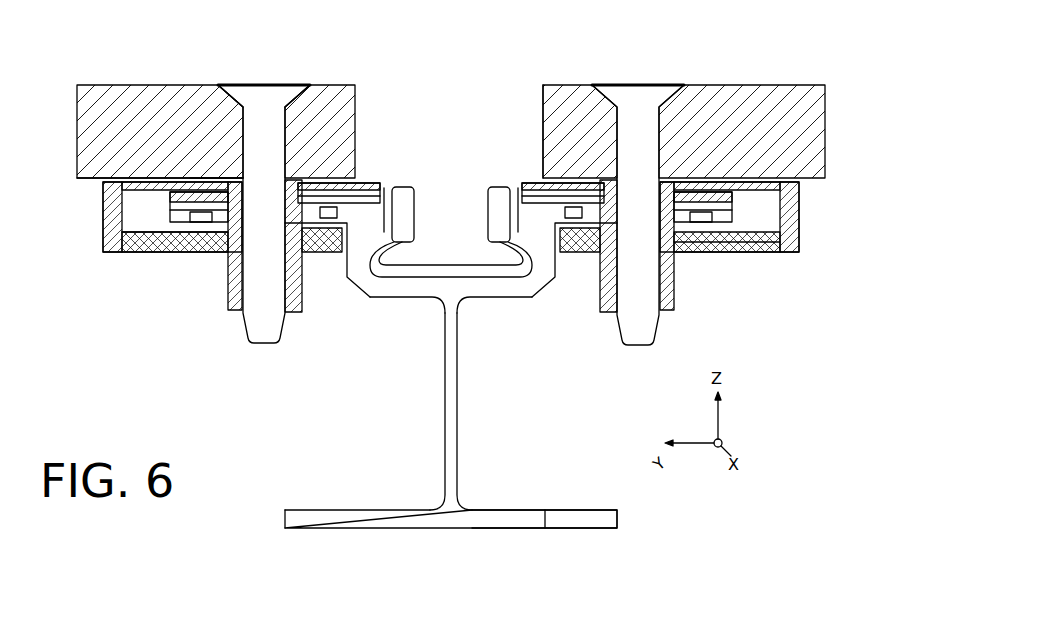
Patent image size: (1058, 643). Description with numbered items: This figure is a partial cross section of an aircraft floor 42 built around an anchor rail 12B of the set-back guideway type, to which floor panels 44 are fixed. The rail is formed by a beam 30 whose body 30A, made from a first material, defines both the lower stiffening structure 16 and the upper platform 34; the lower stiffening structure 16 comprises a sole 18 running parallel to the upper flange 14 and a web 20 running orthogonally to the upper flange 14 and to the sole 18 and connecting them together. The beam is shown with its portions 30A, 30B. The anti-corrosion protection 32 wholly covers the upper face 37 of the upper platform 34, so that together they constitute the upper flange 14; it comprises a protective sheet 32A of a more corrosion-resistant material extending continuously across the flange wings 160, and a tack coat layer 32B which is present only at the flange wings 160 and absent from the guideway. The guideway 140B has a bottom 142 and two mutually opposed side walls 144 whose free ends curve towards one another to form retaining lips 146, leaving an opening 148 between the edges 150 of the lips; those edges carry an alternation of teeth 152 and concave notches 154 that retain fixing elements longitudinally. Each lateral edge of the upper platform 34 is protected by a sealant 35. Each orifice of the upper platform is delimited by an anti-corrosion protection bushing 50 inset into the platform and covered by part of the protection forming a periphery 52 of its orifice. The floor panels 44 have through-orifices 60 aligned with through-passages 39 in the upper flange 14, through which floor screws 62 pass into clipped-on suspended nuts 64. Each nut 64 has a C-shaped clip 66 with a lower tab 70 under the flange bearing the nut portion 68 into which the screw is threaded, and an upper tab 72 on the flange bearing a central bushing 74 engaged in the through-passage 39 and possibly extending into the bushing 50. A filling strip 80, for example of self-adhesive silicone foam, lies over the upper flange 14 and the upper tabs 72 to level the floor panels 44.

The floor 42 is at (95, 106).
The floor panels 44 is at (216, 102).
The upper tab 72 is at (158, 186).
The central bushing 74 is at (199, 186).
The through-orifices 60 is at (249, 84).
The floor screws 62 is at (294, 108).
The filling strip 80 is at (748, 178).
The upper face 37 is at (541, 85).
The through-passage 39 is at (672, 192).
The sealant 35 is at (144, 272).
The clip 66 is at (104, 243).
The clipped-on suspended nut 64 is at (118, 253).
The lower tab 70 is at (155, 253).
The periphery 52 is at (233, 268).
The nut portion 68 is at (198, 256).
The flange wings 160 is at (365, 186).
The anti-corrosion protection bushing 50 is at (316, 256).
The upper flange 14 is at (784, 291).
The anti-corrosion protection 32 is at (769, 316).
The protective sheet 32A is at (745, 316).
The tack coat layer 32B is at (683, 253).
The upper platform 34 is at (722, 253).
The bottom 142 is at (451, 149).
The opening 148 is at (448, 228).
The edges 150 is at (403, 186).
The concave notches 154 is at (412, 131).
The teeth 152 is at (493, 188).
The side walls 144 is at (357, 247).
The retaining lips 146 is at (452, 325).
The guideway 140B is at (524, 307).
The lower stiffening structure 16 is at (406, 425).
The web 20 is at (447, 430).
The sole 18 is at (398, 511).
The beam 30 is at (544, 469).
The body 30A is at (517, 509).
The second flange portion 30B is at (582, 509).
The anchor rail 12B is at (240, 500).